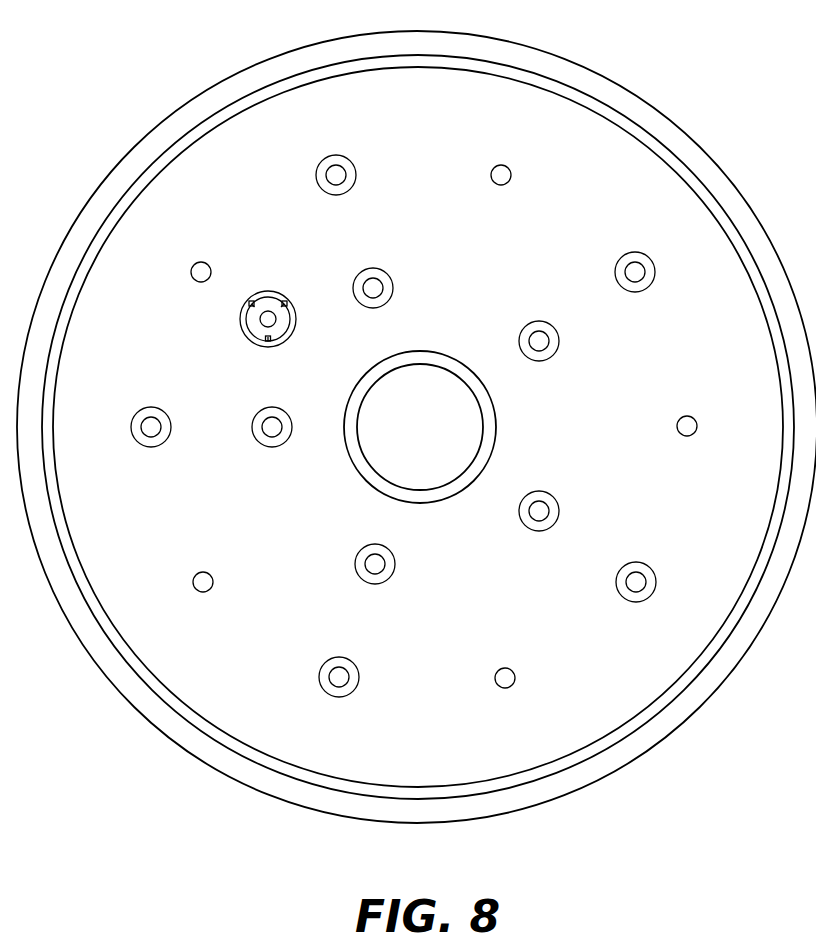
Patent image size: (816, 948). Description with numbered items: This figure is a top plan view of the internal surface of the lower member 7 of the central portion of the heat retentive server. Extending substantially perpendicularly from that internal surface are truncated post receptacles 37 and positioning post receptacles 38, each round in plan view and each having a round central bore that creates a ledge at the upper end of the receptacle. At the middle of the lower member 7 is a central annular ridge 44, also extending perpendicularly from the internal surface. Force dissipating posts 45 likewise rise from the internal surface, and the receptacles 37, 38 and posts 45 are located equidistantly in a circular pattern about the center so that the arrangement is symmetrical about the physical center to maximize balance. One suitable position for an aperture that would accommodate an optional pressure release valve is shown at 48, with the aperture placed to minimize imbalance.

The lower member 7 is at (661, 108).
The truncated post receptacle 37 is at (646, 582).
The positioning post receptacle 38 is at (384, 288).
The central annular ridge 44 is at (487, 423).
The force dissipating post 45 is at (191, 272).
The aperture position for pressure release valve 48 is at (268, 291).